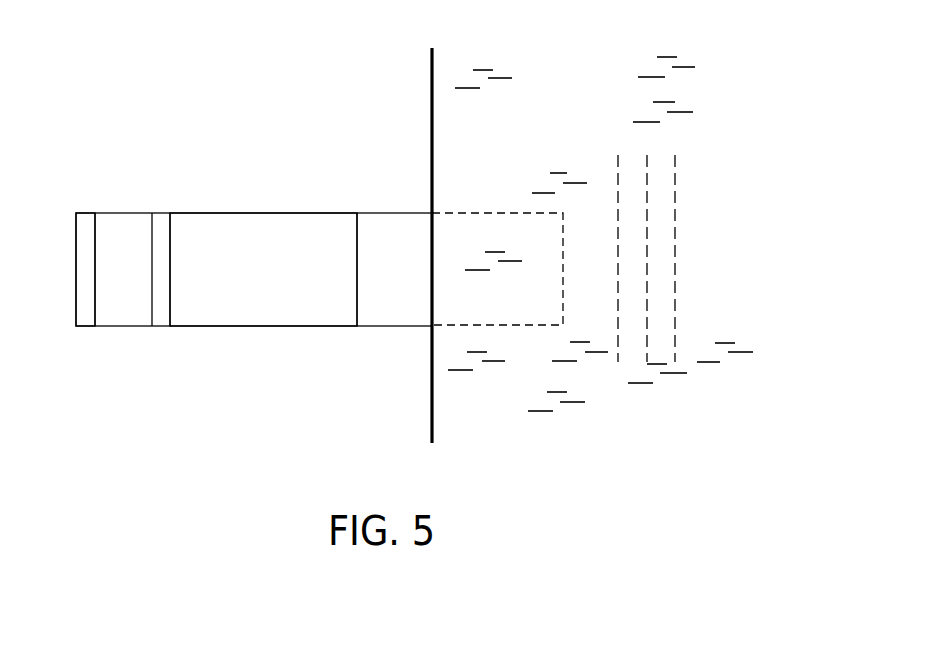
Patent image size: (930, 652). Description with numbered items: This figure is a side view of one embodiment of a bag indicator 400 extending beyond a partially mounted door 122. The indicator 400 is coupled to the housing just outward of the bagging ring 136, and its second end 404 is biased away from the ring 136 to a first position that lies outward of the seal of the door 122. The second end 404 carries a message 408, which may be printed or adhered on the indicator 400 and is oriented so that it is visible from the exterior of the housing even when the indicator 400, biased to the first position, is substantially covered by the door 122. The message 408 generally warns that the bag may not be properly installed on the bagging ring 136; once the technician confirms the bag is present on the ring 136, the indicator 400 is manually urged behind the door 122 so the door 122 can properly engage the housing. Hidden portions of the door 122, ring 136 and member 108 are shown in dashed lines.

The indicator 400 is at (120, 213).
The second end 404 is at (76, 297).
The message 408 is at (235, 212).
The door 122 is at (517, 183).
The bagging ring 136 is at (617, 173).
The frame member 108 is at (675, 228).